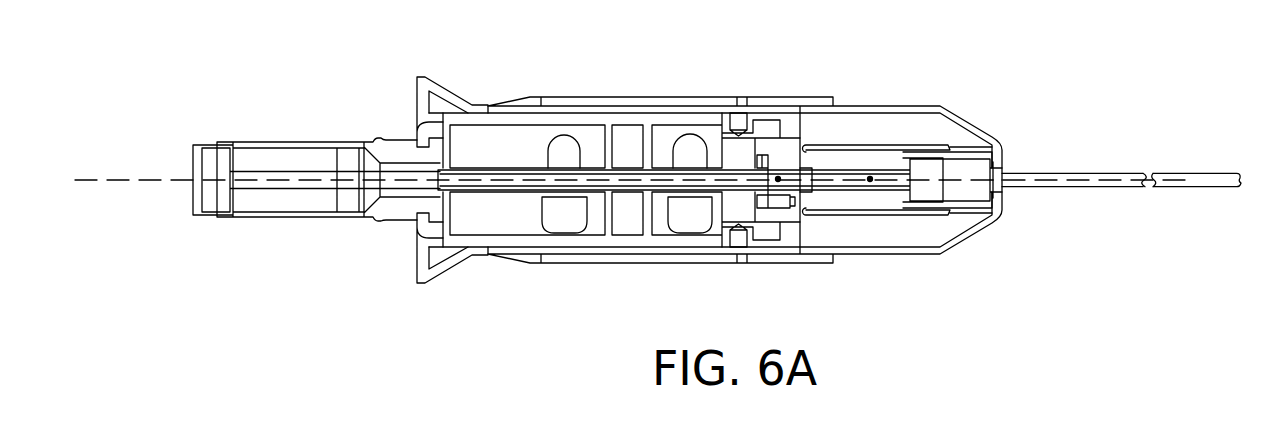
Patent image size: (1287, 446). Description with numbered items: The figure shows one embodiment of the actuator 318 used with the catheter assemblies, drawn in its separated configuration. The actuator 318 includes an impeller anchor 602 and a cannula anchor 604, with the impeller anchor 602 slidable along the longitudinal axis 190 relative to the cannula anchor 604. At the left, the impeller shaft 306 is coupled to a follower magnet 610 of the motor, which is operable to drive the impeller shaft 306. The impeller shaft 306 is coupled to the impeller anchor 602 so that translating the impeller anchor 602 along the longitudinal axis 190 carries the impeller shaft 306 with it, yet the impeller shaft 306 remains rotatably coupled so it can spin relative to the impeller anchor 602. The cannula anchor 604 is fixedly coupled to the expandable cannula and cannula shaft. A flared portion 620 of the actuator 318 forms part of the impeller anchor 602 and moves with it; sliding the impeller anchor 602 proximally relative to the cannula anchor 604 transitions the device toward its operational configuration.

The actuator 318 is at (757, 51).
The flared portion 620 is at (445, 85).
The impeller anchor 602 is at (425, 222).
The follower magnet 610 is at (210, 215).
The cannula anchor 604 is at (803, 263).
The longitudinal axis 190 is at (1028, 175).
The impeller shaft 306 is at (1100, 187).